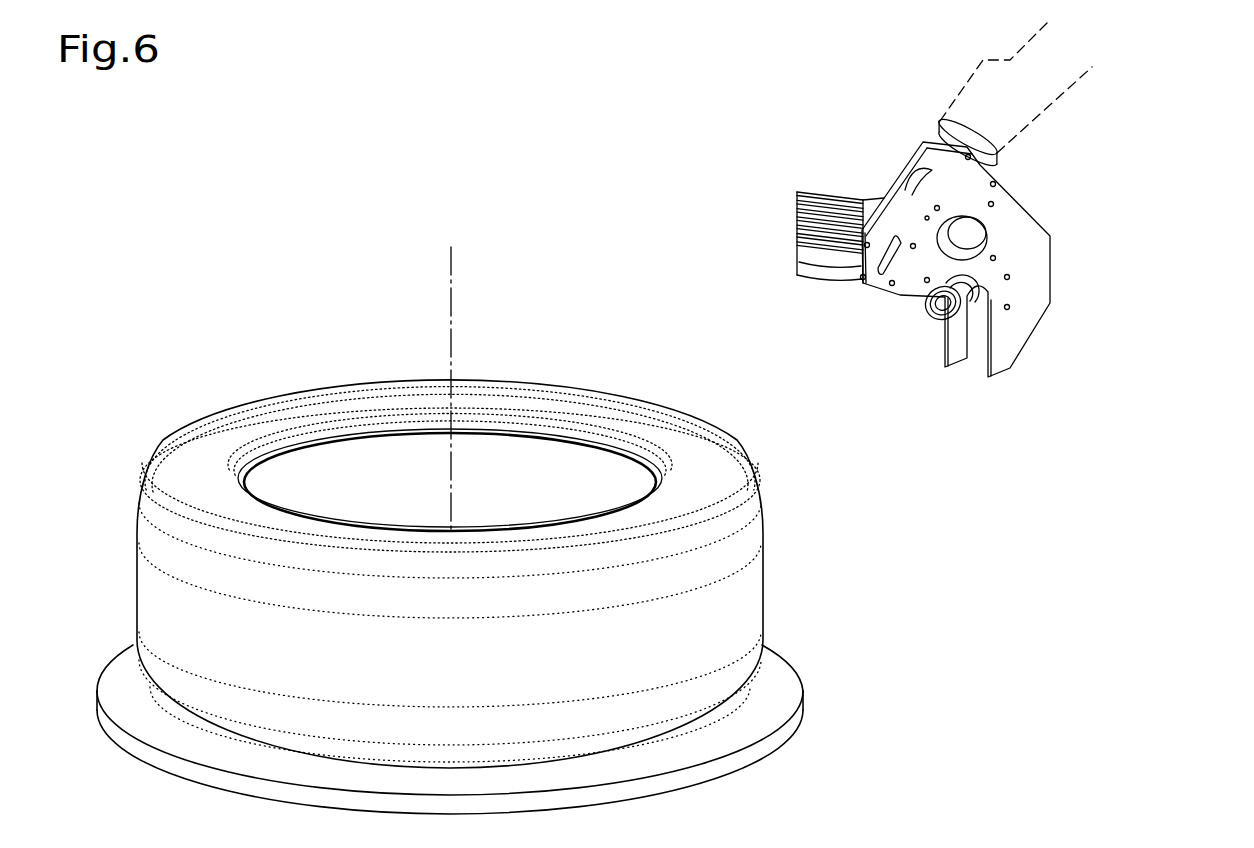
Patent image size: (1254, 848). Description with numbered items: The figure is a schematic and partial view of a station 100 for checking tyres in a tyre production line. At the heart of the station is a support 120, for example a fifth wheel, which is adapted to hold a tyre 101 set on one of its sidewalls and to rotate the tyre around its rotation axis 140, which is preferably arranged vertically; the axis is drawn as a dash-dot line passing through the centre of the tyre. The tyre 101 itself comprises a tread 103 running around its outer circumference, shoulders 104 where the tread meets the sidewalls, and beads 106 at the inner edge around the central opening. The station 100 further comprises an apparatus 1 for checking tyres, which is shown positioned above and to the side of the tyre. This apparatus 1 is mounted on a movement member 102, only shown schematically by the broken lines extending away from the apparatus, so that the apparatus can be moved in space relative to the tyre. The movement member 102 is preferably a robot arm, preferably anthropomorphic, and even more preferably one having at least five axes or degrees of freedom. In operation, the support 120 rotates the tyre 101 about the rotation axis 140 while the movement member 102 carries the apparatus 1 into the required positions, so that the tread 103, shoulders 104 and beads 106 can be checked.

The apparatus for checking tyres 1 is at (747, 168).
The station for checking tyres 100 is at (658, 482).
The tyre 101 is at (522, 487).
The movement member 102 is at (1063, 115).
The tread 103 is at (768, 582).
The shoulders 104 is at (762, 470).
The beads 106 is at (623, 458).
The support 120 is at (763, 713).
The rotation axis 140 is at (447, 263).